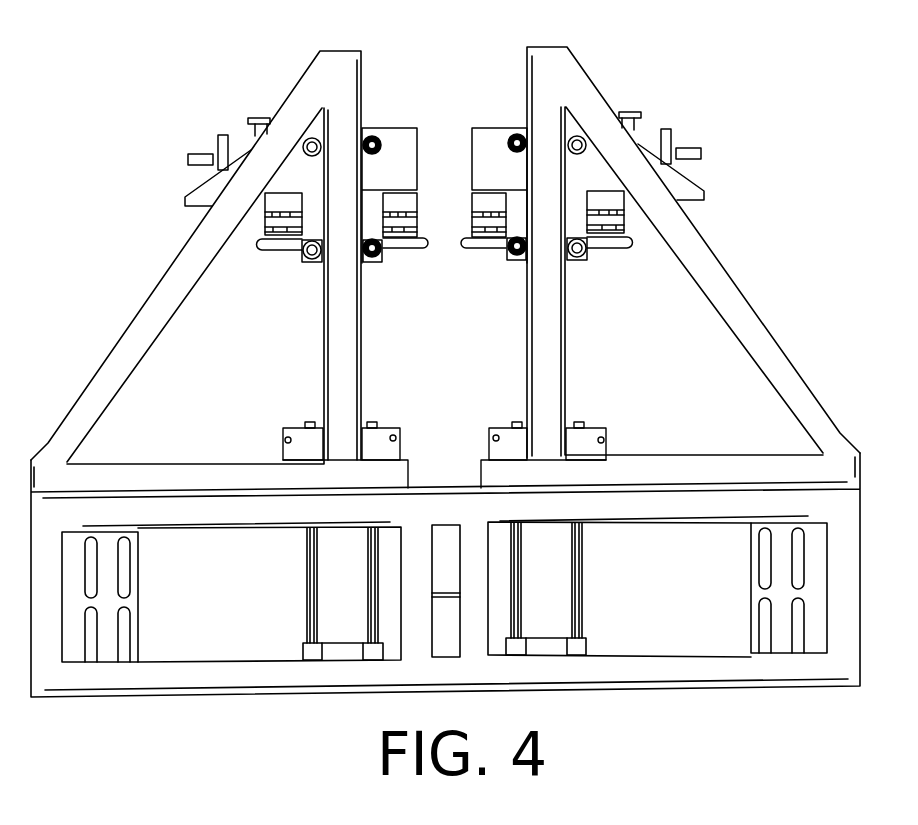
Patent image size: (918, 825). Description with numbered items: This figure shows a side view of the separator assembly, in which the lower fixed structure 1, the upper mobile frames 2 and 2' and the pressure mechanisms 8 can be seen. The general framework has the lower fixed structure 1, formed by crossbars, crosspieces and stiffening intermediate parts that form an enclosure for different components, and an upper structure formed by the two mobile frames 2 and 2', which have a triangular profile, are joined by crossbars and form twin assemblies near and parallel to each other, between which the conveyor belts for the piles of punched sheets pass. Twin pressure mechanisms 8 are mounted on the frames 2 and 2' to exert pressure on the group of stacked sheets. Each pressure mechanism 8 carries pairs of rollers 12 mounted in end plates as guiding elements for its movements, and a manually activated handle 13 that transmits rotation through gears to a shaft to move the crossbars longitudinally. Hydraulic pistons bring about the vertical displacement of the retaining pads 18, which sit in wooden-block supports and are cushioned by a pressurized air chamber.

The lower fixed structure 1 is at (665, 668).
The upper mobile frame 2 is at (196, 257).
The upper mobile frame 2' is at (693, 252).
The pressure mechanism 8 is at (489, 143).
The rollers 12 is at (372, 150).
The manually activated handle 13 is at (196, 151).
The retaining pads 18 is at (255, 245).